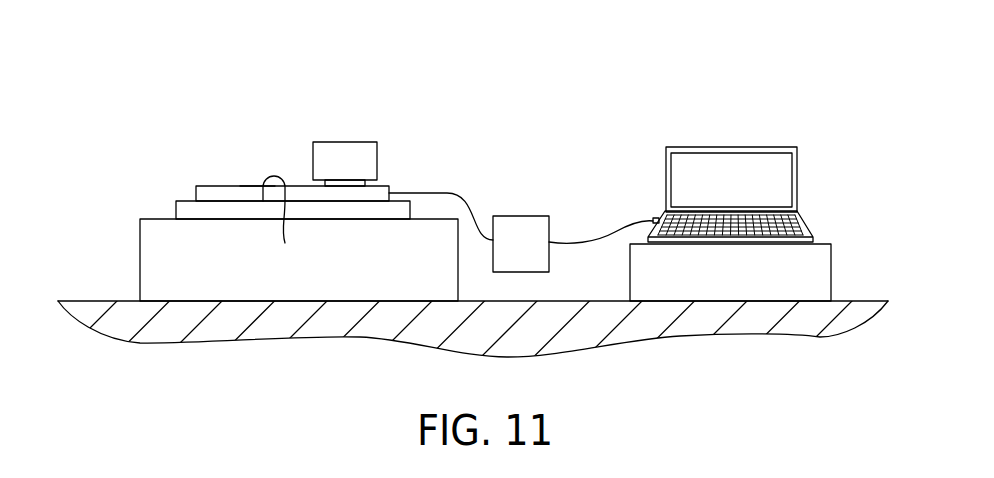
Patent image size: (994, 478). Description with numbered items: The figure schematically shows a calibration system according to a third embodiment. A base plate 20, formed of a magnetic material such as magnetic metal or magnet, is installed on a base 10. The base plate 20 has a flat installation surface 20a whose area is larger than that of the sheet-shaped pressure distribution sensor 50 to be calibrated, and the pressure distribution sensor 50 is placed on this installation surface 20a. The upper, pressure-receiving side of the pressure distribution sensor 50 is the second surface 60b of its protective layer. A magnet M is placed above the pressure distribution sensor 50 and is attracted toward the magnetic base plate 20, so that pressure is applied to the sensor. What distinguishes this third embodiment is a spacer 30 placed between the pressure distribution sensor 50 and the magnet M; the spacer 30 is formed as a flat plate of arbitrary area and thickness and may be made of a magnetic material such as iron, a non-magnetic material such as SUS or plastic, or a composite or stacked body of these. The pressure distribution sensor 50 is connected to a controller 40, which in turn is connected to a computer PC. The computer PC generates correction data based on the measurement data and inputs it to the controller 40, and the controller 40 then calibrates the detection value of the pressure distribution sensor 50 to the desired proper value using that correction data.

The base 10 is at (228, 275).
The base plate 20 is at (180, 207).
The installation surface 20a is at (285, 224).
The pressure distribution sensor 50 is at (207, 186).
The second surface 60b is at (257, 186).
The magnet M is at (345, 152).
The spacer 30 is at (363, 186).
The controller 40 is at (520, 225).
The computer PC is at (687, 142).